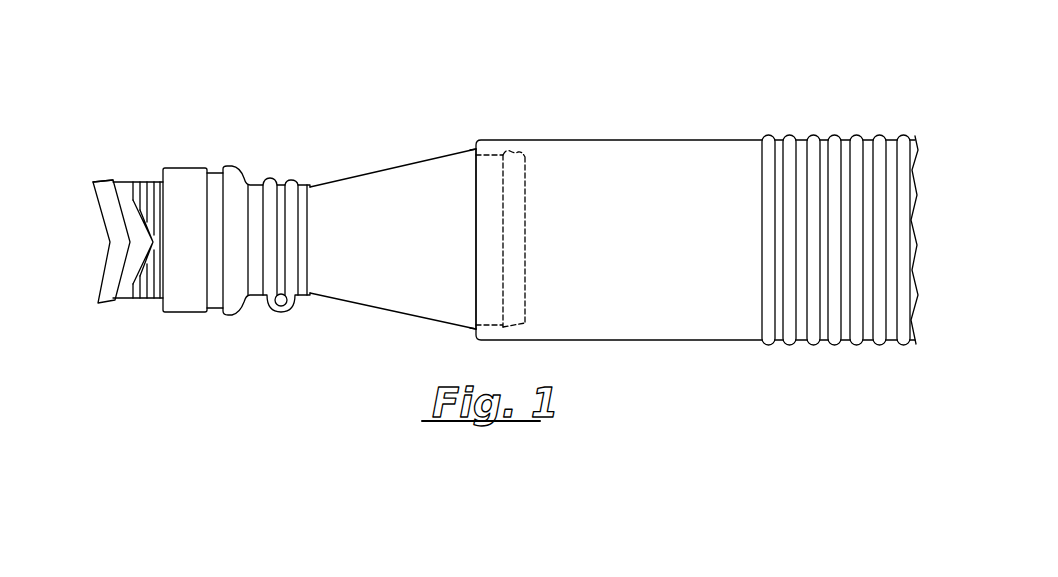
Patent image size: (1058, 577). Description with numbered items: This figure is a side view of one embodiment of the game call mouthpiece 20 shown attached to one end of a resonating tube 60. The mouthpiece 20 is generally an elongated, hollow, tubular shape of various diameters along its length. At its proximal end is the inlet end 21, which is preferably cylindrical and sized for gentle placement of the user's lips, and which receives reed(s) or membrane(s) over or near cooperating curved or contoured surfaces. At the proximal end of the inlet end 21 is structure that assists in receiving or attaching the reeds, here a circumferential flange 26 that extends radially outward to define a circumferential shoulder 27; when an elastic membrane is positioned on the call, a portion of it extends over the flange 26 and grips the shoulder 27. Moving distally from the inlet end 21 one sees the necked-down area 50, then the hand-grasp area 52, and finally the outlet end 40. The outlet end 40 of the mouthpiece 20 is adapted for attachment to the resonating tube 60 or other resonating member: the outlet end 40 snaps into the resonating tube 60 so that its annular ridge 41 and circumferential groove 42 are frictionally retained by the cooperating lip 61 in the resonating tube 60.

The mouthpiece 20 is at (736, 79).
The inlet end 21 is at (86, 178).
The circumferential flange 26 is at (107, 292).
The circumferential shoulder 27 is at (107, 180).
The outlet end 40 is at (536, 213).
The annular ridge 41 is at (520, 158).
The circumferential groove 42 is at (493, 157).
The necked-down area 50 is at (148, 176).
The hand-grasp area 52 is at (339, 176).
The resonating tube 60 is at (723, 134).
The lip 61 is at (477, 173).